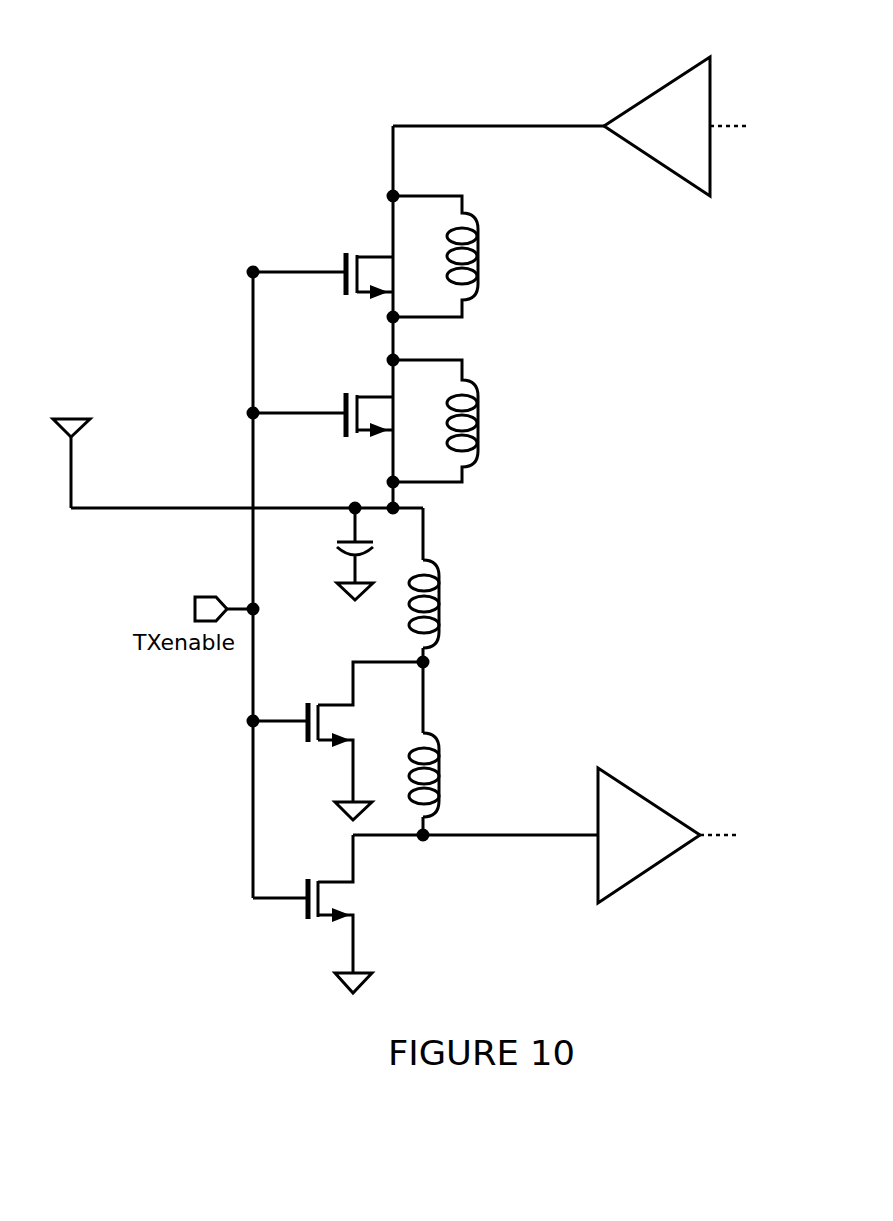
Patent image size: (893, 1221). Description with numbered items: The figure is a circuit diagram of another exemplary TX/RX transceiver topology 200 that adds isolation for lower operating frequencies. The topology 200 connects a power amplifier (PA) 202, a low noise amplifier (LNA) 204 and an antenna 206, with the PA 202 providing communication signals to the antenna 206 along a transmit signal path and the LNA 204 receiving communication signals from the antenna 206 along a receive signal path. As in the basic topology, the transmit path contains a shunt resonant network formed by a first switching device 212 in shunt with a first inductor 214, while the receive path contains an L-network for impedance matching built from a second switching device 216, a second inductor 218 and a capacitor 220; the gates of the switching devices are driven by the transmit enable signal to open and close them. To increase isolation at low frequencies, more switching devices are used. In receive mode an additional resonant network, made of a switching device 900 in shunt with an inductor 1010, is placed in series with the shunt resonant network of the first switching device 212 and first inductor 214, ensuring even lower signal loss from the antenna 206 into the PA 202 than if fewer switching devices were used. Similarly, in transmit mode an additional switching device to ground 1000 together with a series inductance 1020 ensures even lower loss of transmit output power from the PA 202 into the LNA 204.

The TX/RX transceiver topology 200 is at (183, 72).
The power amplifier (PA) 202 is at (711, 100).
The low noise amplifier (LNA) 204 is at (638, 787).
The antenna 206 is at (72, 418).
The first switching device (SW1) 212 is at (320, 230).
The first inductor (L1) 214 is at (504, 255).
The second switching device (SW2) 216 is at (302, 766).
The second inductor (L2) 218 is at (467, 593).
The capacitor (C1) 220 is at (328, 572).
The switching device 900 is at (328, 448).
The switching device to ground 1000 is at (301, 946).
The inductor 1010 is at (507, 420).
The series inductance 1020 is at (470, 756).